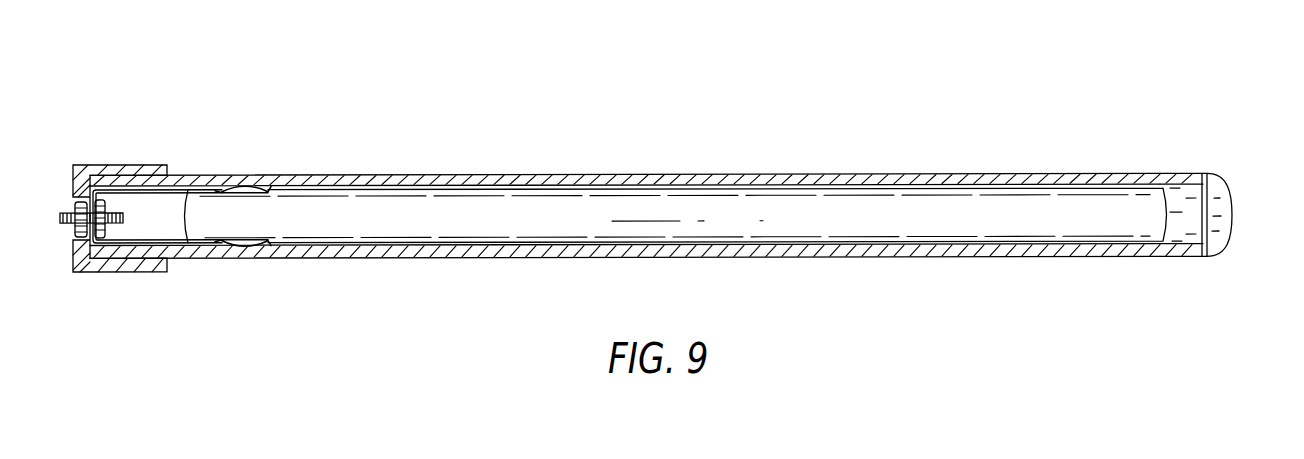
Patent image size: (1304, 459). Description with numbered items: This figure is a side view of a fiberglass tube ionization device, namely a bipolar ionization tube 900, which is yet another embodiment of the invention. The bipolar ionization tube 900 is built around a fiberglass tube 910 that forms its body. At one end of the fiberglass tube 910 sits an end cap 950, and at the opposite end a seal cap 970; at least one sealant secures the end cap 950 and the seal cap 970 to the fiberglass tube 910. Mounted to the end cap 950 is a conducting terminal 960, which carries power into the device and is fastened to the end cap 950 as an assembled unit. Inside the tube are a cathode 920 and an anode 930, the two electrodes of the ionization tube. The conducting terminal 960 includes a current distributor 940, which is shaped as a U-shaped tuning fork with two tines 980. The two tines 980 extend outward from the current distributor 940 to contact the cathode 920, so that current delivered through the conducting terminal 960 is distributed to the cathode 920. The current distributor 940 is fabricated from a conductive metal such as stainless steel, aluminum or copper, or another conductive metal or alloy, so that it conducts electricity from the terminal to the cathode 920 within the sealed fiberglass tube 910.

The bipolar ionization tube 900 is at (887, 118).
The fiberglass tube 910 is at (1168, 257).
The cathode 920 is at (1174, 212).
The anode 930 is at (392, 262).
The current distributor 940 is at (201, 189).
The end cap 950 is at (137, 164).
The conducting terminal 960 is at (63, 206).
The seal cap 970 is at (1221, 256).
The tines 980 is at (257, 248).